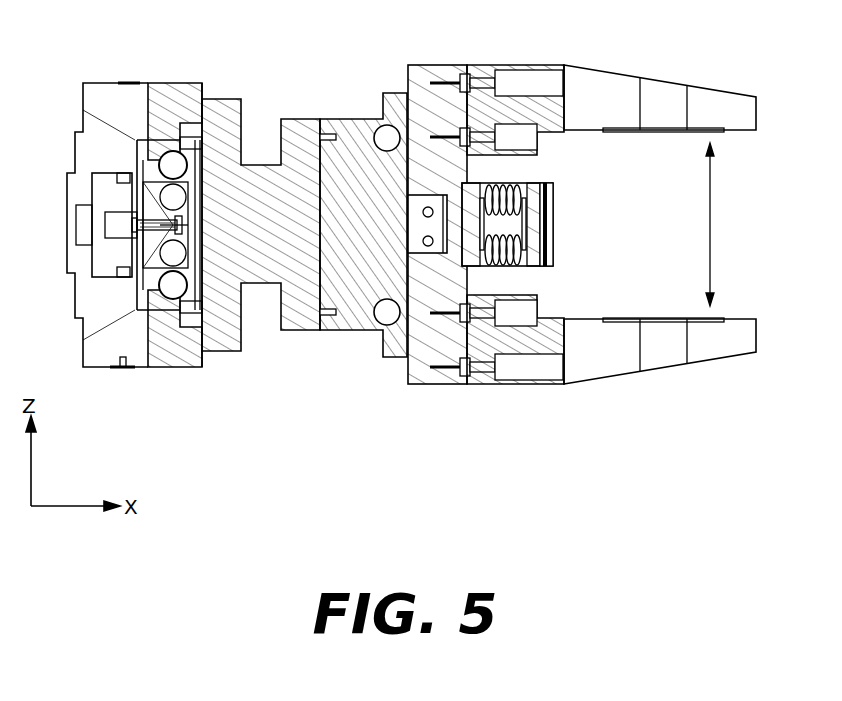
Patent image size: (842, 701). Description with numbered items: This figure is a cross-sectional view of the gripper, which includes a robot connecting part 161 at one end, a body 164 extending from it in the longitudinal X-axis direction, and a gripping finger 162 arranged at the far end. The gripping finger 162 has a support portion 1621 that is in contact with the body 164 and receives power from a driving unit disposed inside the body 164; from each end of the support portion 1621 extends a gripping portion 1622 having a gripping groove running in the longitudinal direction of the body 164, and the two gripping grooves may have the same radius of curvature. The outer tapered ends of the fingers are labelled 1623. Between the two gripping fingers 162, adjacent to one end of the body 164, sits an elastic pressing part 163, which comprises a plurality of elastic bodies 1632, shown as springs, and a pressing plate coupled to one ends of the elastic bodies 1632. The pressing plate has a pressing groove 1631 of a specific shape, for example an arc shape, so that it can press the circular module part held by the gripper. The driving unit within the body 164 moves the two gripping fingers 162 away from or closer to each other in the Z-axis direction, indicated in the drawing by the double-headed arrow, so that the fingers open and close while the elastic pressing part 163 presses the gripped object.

The robot connecting part 161 is at (106, 83).
The gripping finger 162 is at (590, 215).
The support portion 1621 is at (446, 65).
The gripping portion 1622 is at (596, 80).
The clamping jaw 1623 is at (667, 87).
The elastic pressing part 163 is at (553, 219).
The pressing groove 1631 is at (553, 215).
The elastic body 1632 is at (515, 266).
The body 164 is at (355, 119).